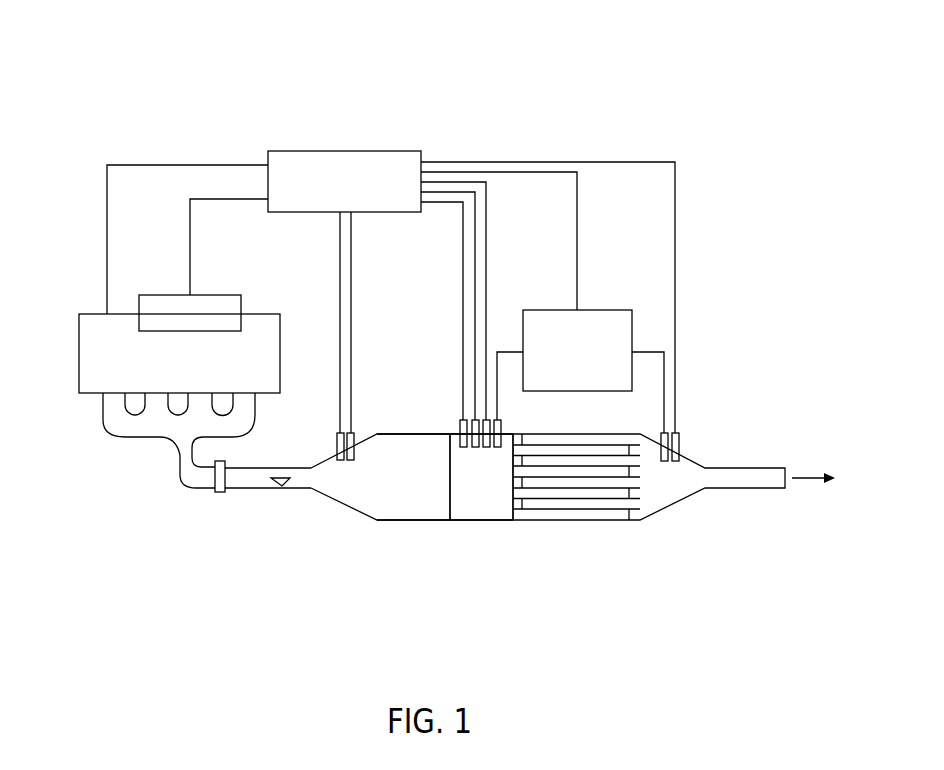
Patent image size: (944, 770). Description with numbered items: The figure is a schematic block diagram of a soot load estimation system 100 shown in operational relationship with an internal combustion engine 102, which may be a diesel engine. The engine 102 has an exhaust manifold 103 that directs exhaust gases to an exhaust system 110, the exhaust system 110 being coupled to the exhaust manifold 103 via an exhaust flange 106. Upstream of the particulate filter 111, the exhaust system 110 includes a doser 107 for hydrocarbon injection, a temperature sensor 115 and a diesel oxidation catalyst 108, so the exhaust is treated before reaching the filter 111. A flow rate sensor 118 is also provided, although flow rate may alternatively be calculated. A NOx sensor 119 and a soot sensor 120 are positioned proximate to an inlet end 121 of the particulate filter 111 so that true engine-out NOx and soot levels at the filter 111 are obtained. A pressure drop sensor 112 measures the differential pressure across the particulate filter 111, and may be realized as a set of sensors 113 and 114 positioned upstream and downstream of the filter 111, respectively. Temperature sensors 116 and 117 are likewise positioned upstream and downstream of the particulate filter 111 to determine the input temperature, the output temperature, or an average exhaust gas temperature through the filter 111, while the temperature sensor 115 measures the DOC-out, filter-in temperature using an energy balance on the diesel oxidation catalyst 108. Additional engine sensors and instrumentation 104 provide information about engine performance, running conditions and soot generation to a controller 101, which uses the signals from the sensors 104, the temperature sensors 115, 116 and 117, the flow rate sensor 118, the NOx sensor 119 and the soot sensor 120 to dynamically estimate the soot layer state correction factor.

The soot load estimation system 100 is at (548, 58).
The controller 101 is at (350, 151).
The internal combustion engine 102 is at (92, 314).
The exhaust manifold 103 is at (175, 458).
The additional sensors and/or instrumentation 104 is at (219, 295).
The exhaust flange 106 is at (218, 493).
The doser 107 is at (272, 487).
The diesel oxidation catalyst 108 is at (418, 522).
The exhaust system 110 is at (702, 376).
The particulate filter 111 is at (608, 522).
The pressure drop sensor 112 is at (596, 311).
The upstream pressure sensor 113 is at (502, 423).
The downstream pressure sensor 114 is at (663, 463).
The temperature sensor 115 is at (355, 440).
The temperature sensor 116 is at (486, 450).
The temperature sensor 117 is at (680, 445).
The flow rate sensor 118 is at (338, 446).
The NOx sensor 119 is at (474, 450).
The soot sensor 120 is at (459, 423).
The inlet end 121 is at (514, 480).